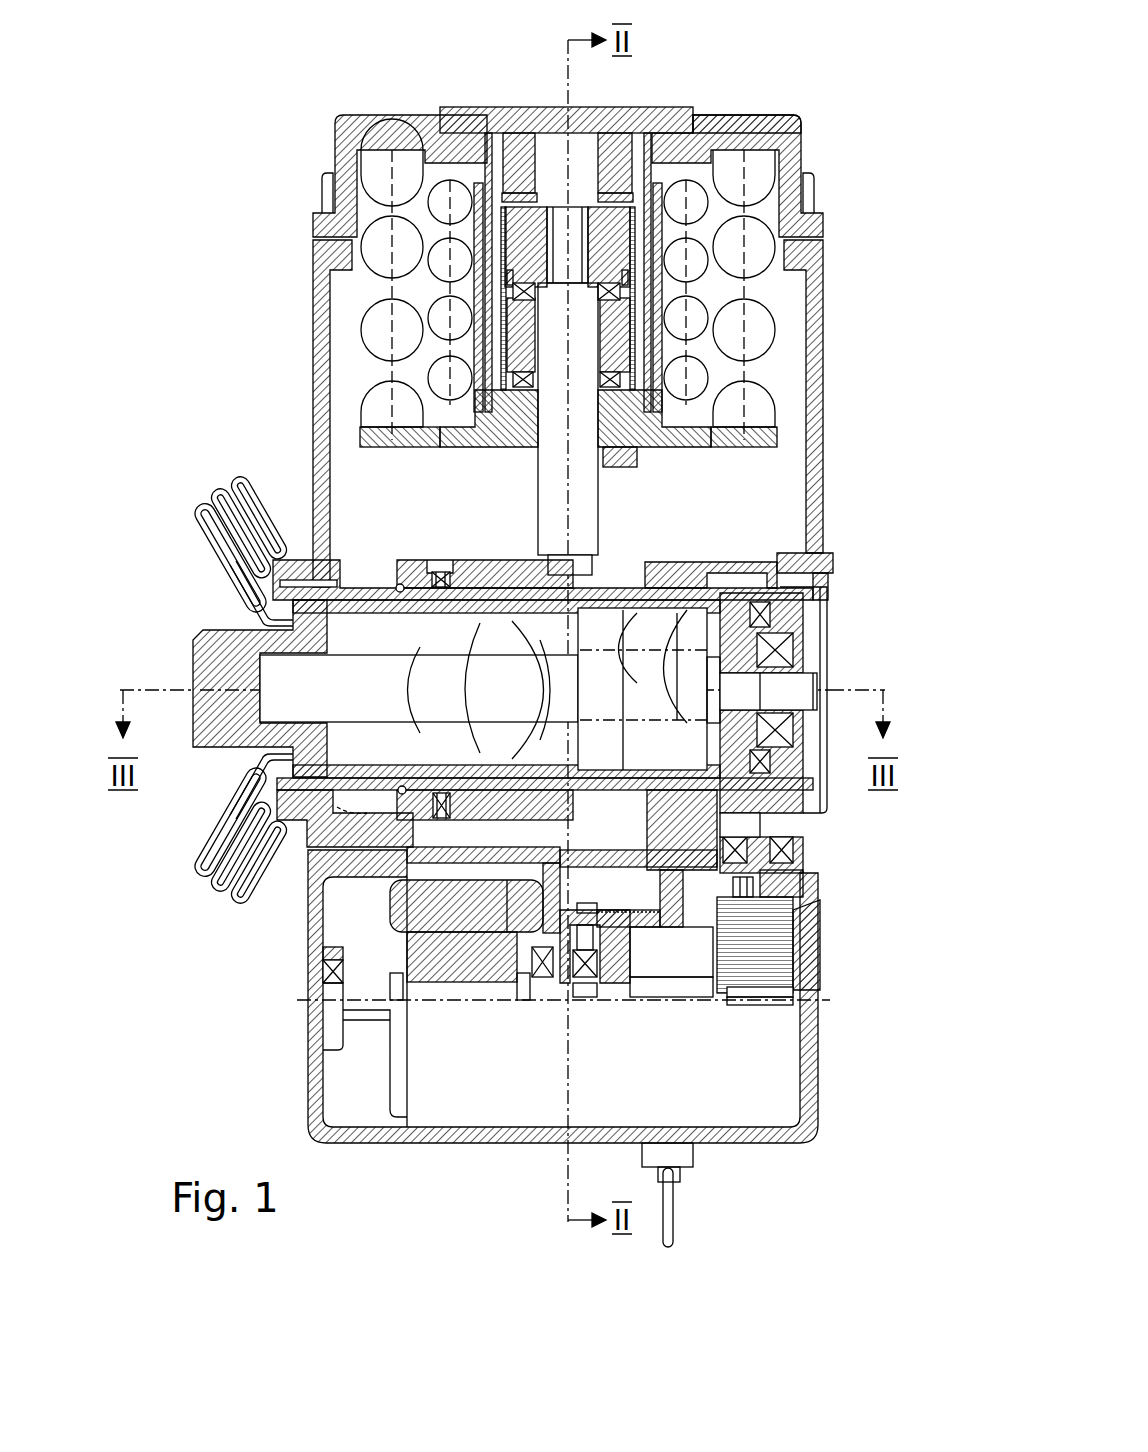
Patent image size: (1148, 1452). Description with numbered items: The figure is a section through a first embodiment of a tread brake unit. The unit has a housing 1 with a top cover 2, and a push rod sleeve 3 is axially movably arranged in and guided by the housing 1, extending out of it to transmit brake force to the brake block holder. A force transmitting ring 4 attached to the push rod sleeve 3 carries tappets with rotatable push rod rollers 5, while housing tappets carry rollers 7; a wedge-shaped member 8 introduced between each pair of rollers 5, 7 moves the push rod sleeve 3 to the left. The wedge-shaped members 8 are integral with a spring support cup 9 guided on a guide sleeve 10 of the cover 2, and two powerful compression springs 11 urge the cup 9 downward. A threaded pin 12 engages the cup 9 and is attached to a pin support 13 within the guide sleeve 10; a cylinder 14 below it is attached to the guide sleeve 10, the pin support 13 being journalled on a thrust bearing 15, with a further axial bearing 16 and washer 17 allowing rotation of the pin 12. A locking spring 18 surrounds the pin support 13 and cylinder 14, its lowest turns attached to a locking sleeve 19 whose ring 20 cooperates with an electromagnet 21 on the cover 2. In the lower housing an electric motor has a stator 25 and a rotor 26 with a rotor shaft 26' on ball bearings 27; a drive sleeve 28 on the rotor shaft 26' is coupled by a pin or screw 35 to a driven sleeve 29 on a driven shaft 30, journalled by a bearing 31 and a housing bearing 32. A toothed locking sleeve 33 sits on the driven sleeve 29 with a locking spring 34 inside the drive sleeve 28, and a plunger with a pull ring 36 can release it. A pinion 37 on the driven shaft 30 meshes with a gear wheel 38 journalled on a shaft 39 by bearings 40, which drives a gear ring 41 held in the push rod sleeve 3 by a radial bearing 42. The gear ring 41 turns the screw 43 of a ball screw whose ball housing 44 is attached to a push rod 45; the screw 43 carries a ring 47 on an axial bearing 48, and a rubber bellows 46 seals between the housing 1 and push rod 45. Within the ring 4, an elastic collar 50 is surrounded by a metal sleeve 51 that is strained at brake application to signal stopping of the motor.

The housing 1 is at (820, 362).
The top cover 2 is at (787, 127).
The push rod sleeve 3 is at (303, 577).
The force transmitting ring 4 is at (477, 570).
The push rod roller 5 is at (507, 573).
The roller 7 is at (713, 583).
The wedge-shaped member 8 is at (622, 506).
The spring support cup 9 is at (433, 430).
The guide sleeve 10 is at (493, 118).
The compression springs 11 is at (695, 310).
The threaded pin 12 is at (617, 507).
The pin support 13 is at (608, 256).
The cylinder 14 is at (700, 332).
The thrust bearing 15 is at (615, 323).
The axial bearing 16 is at (612, 385).
The washer 17 is at (495, 390).
The locking spring 18 is at (643, 222).
The locking sleeve 19 is at (500, 265).
The ring 20 is at (643, 110).
The electromagnet 21 is at (632, 178).
The stator 25 is at (437, 908).
The rotor 26 is at (519, 996).
The rotor shaft 26' is at (308, 1050).
The ball bearings 27 is at (327, 973).
The drive sleeve 28 is at (583, 973).
The driven sleeve 29 is at (620, 983).
The driven shaft 30 is at (678, 993).
The bearing 31 is at (590, 977).
The housing bearing 32 is at (812, 990).
The locking sleeve 33 is at (630, 920).
The locking spring 34 is at (652, 917).
The pin or screw 35 is at (585, 905).
The pull ring 36 is at (667, 1212).
The pinion 37 is at (773, 1000).
The gear wheel 38 is at (753, 947).
The shaft 39 is at (787, 893).
The bearings 40 is at (778, 852).
The gear ring 41 is at (820, 653).
The radial bearing 42 is at (790, 652).
The screw 43 is at (363, 677).
The ball housing 44 is at (662, 675).
The push rod 45 is at (217, 657).
The rubber bellows 46 is at (258, 505).
The ring 47 is at (762, 588).
The axial bearing 48 is at (824, 590).
The collar 50 is at (433, 790).
The metal sleeve 51 is at (440, 815).